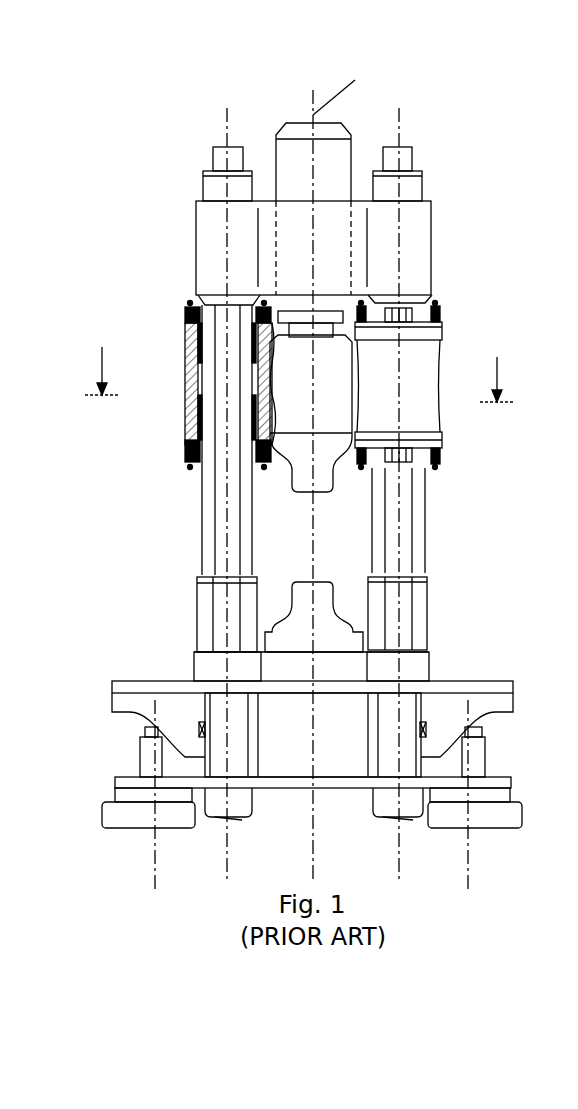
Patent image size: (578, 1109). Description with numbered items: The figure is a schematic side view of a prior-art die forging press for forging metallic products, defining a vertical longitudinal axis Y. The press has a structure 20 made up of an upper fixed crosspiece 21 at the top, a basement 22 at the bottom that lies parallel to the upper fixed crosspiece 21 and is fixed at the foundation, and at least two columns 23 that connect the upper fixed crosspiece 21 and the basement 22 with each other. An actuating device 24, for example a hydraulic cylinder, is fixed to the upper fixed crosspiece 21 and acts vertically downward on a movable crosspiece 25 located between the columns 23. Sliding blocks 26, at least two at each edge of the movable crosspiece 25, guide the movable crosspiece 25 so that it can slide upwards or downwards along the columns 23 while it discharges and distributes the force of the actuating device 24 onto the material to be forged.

The structure 20 is at (305, 477).
The upper fixed crosspiece 21 is at (213, 252).
The basement 22 is at (347, 728).
The columns 23 is at (210, 507).
The actuating device 24 is at (328, 157).
The movable crosspiece 25 is at (342, 370).
The sliding blocks 26 is at (255, 327).